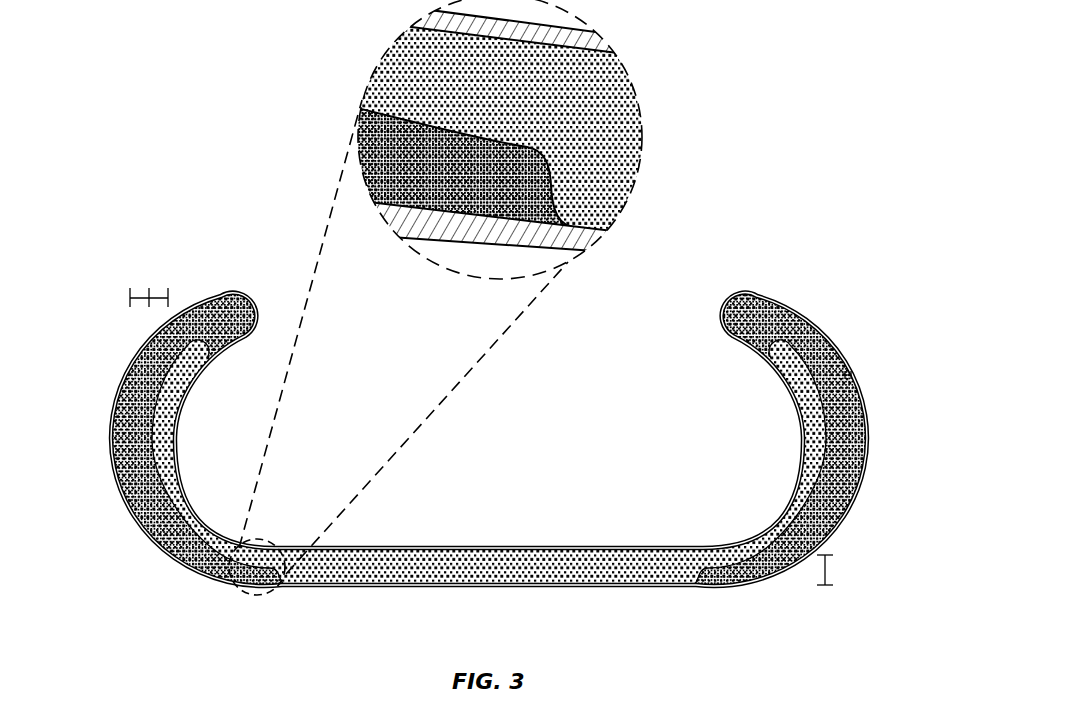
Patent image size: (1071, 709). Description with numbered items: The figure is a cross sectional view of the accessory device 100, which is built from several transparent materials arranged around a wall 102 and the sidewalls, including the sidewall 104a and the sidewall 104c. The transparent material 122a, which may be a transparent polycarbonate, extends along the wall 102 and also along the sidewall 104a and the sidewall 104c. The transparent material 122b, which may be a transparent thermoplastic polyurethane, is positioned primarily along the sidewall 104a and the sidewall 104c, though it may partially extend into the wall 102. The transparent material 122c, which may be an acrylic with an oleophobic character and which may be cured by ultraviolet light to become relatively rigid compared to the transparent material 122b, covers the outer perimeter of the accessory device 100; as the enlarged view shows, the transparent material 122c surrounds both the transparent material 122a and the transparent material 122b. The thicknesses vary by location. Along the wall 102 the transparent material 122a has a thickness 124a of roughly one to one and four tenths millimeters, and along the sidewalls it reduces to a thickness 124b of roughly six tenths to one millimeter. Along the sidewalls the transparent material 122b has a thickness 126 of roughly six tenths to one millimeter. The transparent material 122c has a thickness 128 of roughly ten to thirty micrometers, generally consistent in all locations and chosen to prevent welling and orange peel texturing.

The accessory device 100 is at (787, 273).
The wall 102 is at (550, 535).
The sidewall 104a is at (130, 523).
The sidewall 104c is at (847, 507).
The transparent material 122a is at (712, 585).
The transparent material 122b is at (229, 304).
The transparent material 122c is at (492, 245).
The thickness 124a is at (827, 568).
The thickness 124b is at (157, 290).
The thickness 126 is at (143, 292).
The thickness 128 is at (848, 371).